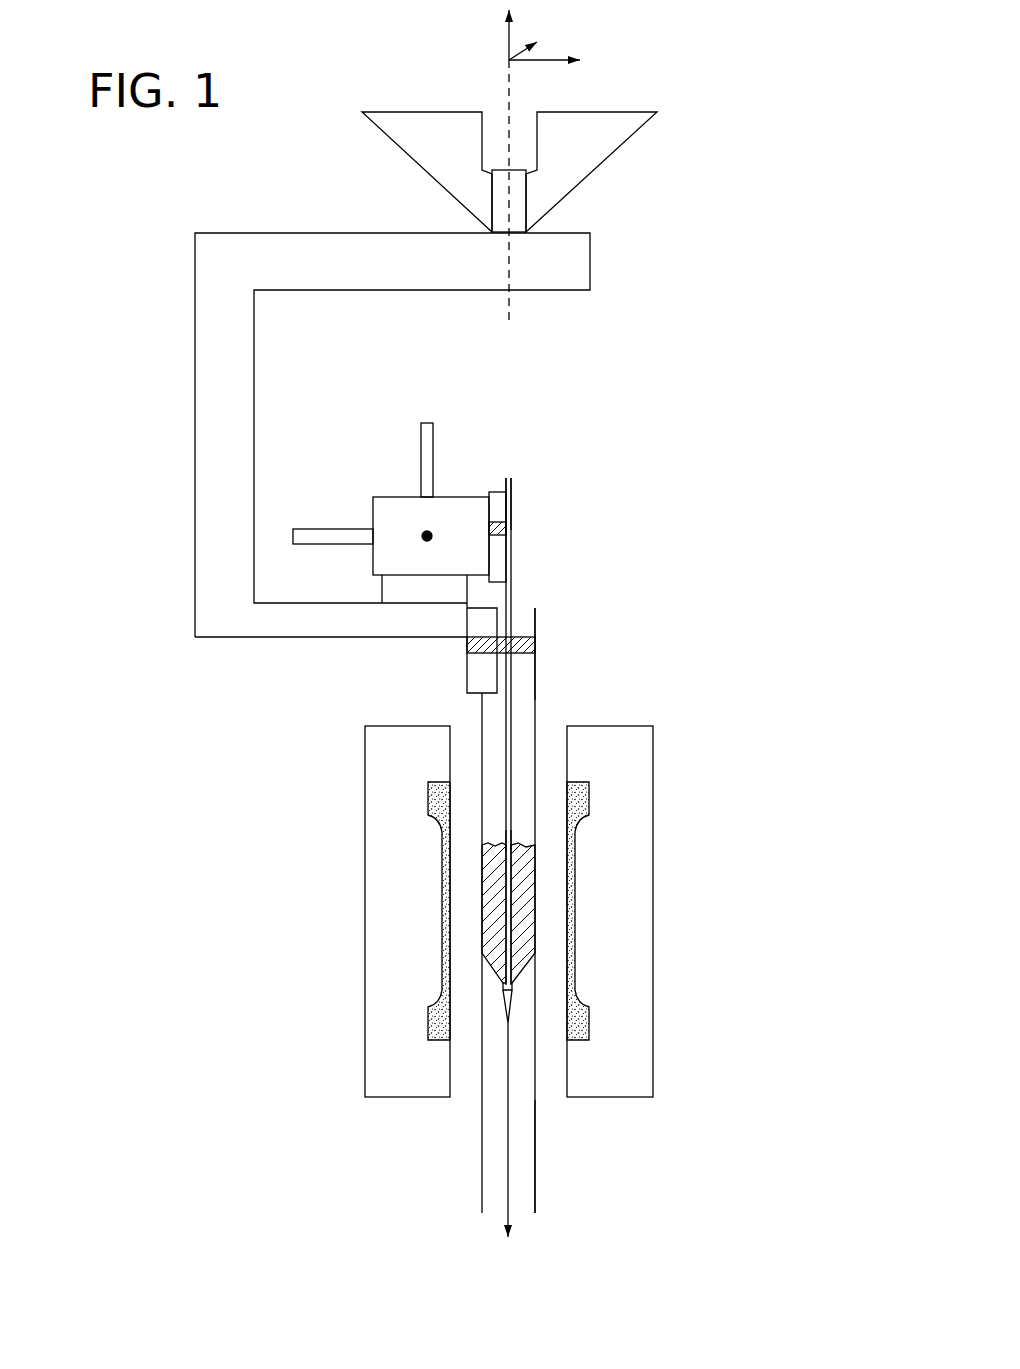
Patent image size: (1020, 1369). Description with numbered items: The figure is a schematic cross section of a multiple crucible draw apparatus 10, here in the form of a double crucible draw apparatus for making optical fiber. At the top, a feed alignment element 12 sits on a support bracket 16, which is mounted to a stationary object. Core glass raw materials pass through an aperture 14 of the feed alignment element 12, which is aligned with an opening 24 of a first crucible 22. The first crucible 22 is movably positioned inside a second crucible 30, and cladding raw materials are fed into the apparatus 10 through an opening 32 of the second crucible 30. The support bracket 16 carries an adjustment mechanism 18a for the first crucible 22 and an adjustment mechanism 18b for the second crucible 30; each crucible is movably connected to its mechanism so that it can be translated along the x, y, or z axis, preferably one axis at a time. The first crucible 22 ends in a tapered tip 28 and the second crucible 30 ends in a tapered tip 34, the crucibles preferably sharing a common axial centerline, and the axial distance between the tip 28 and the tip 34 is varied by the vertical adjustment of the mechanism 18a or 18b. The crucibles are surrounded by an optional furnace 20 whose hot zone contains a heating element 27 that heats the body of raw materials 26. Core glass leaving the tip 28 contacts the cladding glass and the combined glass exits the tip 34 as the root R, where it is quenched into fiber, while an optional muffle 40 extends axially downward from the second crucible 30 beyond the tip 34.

The multiple crucible draw apparatus 10 is at (93, 1100).
The feed alignment element 12 is at (593, 120).
The aperture 14 is at (515, 170).
The support bracket 16 is at (213, 340).
The adjustment mechanism 18a is at (497, 495).
The adjustment mechanism 18b is at (475, 673).
The furnace 20 is at (352, 920).
The first crucible 22 is at (511, 500).
The opening 24 is at (511, 478).
The body of raw materials 26 is at (513, 834).
The heating element 27 is at (577, 885).
The tip 28 is at (535, 953).
The second crucible 30 is at (525, 677).
The opening 32 is at (520, 617).
The tip 34 is at (511, 983).
The muffle 40 is at (536, 1165).
The root R is at (513, 1002).